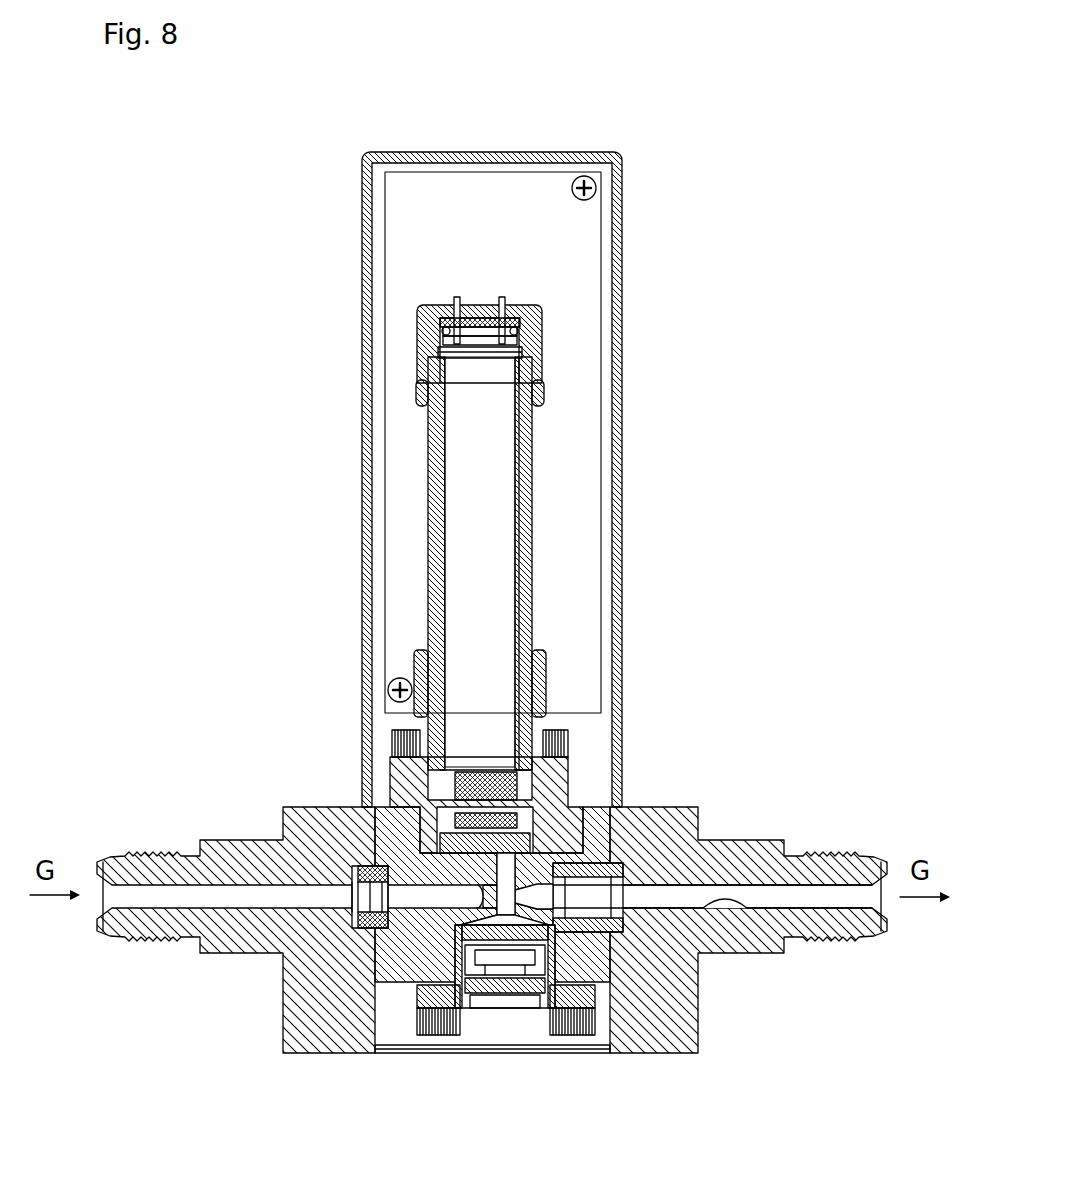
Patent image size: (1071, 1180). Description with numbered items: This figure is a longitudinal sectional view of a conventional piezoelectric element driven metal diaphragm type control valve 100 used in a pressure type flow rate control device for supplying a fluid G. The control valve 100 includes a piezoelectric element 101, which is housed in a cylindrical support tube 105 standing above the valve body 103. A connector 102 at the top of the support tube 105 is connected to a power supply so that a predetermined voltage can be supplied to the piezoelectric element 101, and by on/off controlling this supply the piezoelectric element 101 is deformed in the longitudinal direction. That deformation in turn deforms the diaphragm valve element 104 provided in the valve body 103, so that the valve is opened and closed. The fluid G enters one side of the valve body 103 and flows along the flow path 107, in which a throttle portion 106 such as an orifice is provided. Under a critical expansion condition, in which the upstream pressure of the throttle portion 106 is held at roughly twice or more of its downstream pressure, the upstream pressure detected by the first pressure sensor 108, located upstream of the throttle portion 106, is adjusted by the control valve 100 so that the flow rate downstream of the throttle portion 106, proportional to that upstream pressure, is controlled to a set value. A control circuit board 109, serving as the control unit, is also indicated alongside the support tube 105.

The control valve 100 is at (585, 539).
The piezoelectric element 101 is at (493, 557).
The connector 102 is at (483, 320).
The valve body 103 is at (238, 828).
The diaphragm valve element 104 is at (590, 848).
The support tube 105 is at (535, 610).
The throttle portion 106 is at (617, 888).
The flow path 107 is at (740, 922).
The first pressure sensor 108 is at (500, 940).
The control circuit board 109 is at (587, 281).